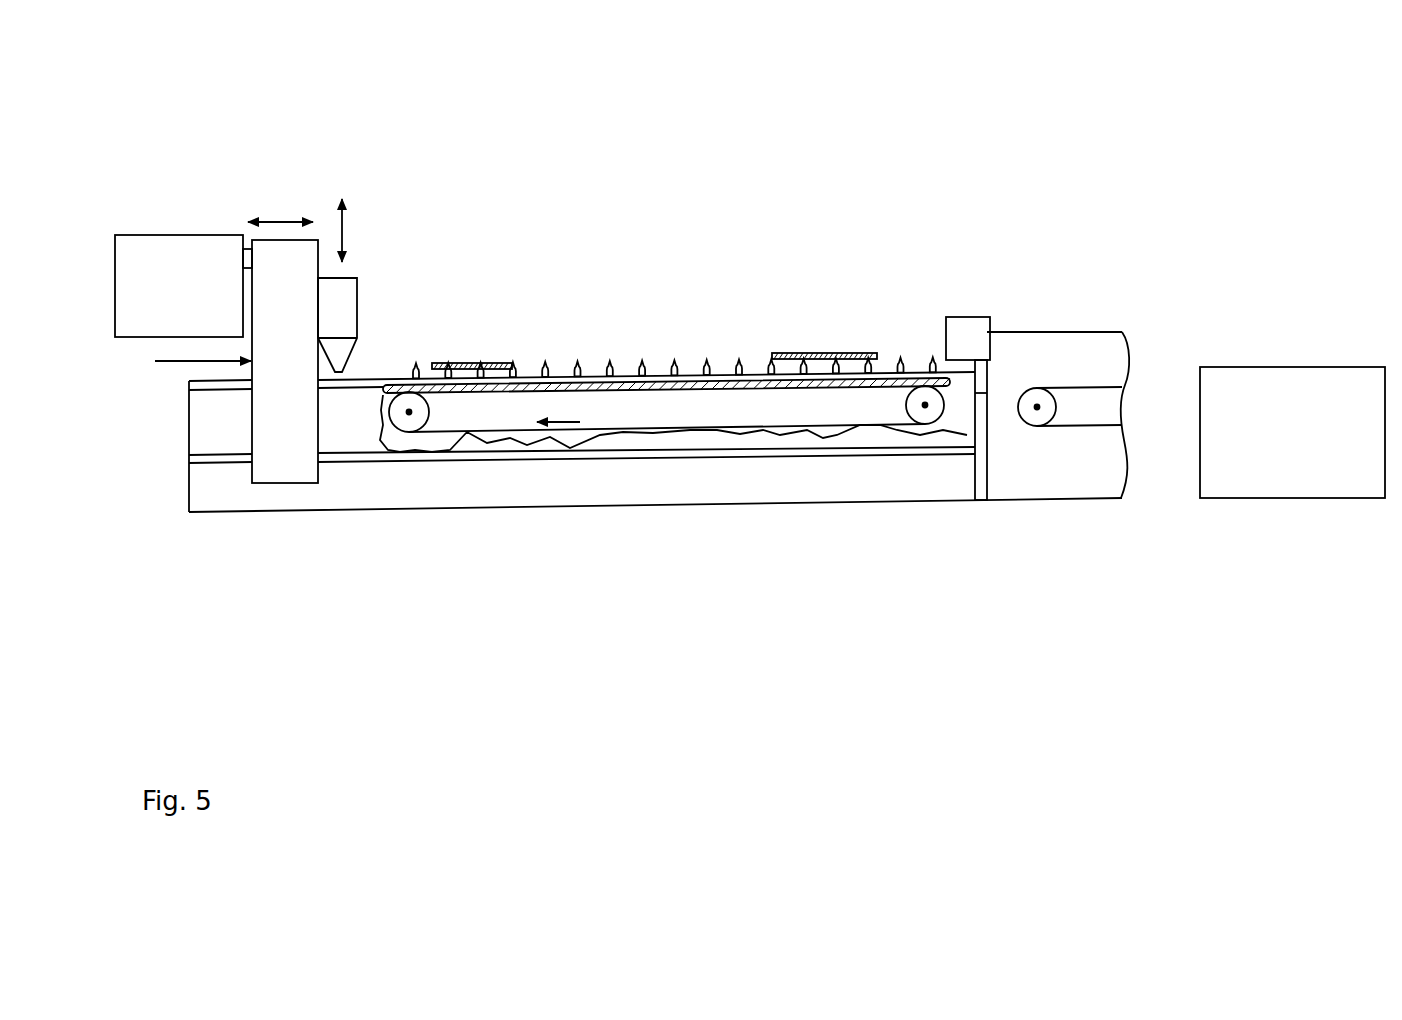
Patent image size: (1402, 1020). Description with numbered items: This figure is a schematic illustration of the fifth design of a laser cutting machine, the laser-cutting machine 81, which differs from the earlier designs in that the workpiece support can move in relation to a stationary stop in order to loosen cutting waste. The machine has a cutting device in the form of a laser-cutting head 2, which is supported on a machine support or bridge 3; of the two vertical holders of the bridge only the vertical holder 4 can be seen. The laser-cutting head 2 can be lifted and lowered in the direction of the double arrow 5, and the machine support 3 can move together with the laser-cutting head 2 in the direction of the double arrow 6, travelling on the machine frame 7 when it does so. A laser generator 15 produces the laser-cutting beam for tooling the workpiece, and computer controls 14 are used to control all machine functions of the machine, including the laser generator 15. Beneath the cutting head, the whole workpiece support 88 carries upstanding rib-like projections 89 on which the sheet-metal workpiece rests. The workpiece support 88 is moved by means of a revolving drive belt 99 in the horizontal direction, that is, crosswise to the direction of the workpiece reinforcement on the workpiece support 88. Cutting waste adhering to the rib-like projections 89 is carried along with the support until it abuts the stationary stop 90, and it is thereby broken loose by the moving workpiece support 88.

The laser-cutting machine 81 is at (195, 183).
The laser generator 15 is at (162, 305).
The vertical holder 4 is at (279, 336).
The laser-cutting head 2 is at (329, 322).
The machine support 3 is at (188, 360).
The double arrow 5 is at (347, 228).
The double arrow 6 is at (283, 219).
The machine frame 7 is at (287, 497).
The workpiece support 88 is at (727, 365).
The rib-like projections 89 is at (643, 360).
The revolving drive belt 99 is at (717, 430).
The stop 90 is at (970, 340).
The computer controls 14 is at (1277, 452).